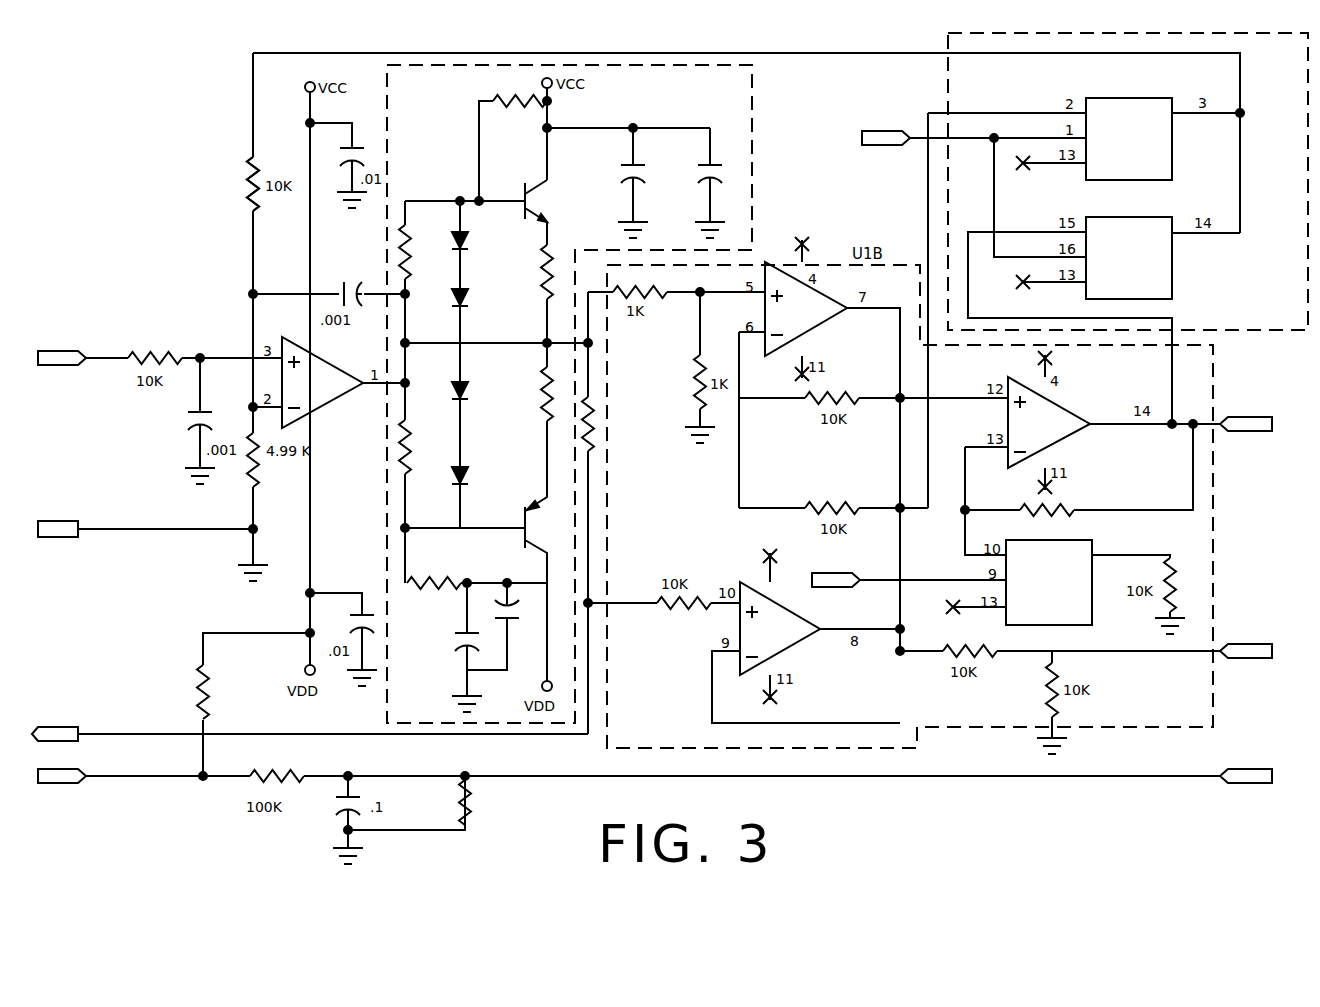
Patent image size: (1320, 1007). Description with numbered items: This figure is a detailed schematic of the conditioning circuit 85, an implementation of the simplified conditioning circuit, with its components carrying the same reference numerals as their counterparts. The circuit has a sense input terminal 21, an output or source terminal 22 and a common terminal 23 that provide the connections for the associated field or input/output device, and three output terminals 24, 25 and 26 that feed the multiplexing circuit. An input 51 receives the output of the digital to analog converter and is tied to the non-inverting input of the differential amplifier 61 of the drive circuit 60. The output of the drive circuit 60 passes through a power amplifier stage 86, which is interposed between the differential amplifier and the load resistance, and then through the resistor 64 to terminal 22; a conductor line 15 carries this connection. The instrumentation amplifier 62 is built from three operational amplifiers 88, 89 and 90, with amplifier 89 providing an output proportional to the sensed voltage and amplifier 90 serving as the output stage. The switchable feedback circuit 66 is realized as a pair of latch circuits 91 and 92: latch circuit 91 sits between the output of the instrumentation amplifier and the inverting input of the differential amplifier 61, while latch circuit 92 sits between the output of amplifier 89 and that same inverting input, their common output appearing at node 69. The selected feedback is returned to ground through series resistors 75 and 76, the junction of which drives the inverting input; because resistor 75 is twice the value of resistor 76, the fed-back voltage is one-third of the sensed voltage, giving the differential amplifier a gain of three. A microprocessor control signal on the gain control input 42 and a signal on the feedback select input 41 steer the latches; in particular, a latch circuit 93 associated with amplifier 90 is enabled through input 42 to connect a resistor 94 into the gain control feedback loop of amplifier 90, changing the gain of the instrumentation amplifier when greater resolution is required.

The conductor line 15 is at (608, 465).
The sense input terminal 21 is at (60, 770).
The output or source terminal 22 is at (55, 727).
The common terminal 23 is at (60, 520).
The output terminal 24 is at (1268, 396).
The output terminal 25 is at (1264, 626).
The output terminal 26 is at (1255, 750).
The feedback select input 41 is at (838, 572).
The gain control input 42 is at (870, 146).
The input of the conditioning circuit 51 is at (88, 350).
The drive circuit 60 is at (360, 514).
The differential amplifier 61 is at (326, 362).
The instrumentation amplifier 62 is at (982, 711).
The resistor 64 is at (592, 416).
The switchable feedback circuit 66 is at (1224, 276).
The output node 69 is at (1242, 112).
The resistor 75 is at (246, 180).
The resistor 76 is at (258, 470).
The conditioning circuit 85 is at (923, 813).
The power amplifier stage 86 is at (431, 650).
The operational amplifier 88 is at (822, 322).
The operational amplifier 89 is at (805, 622).
The operational amplifier 90 is at (1064, 407).
The latch circuit 91 is at (1160, 217).
The latch circuit 92 is at (1160, 98).
The latch circuit 93 is at (1094, 543).
The resistor 94 is at (1075, 500).